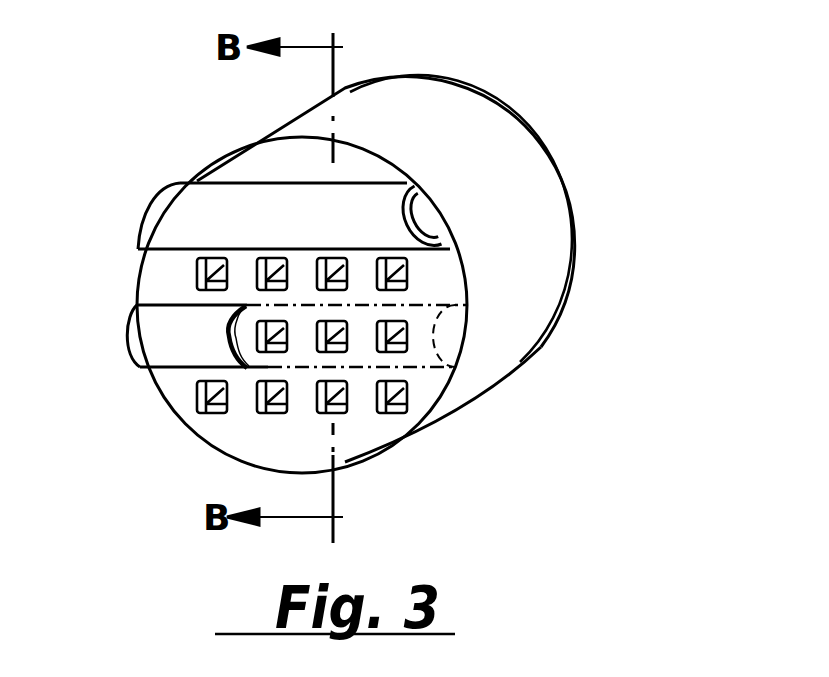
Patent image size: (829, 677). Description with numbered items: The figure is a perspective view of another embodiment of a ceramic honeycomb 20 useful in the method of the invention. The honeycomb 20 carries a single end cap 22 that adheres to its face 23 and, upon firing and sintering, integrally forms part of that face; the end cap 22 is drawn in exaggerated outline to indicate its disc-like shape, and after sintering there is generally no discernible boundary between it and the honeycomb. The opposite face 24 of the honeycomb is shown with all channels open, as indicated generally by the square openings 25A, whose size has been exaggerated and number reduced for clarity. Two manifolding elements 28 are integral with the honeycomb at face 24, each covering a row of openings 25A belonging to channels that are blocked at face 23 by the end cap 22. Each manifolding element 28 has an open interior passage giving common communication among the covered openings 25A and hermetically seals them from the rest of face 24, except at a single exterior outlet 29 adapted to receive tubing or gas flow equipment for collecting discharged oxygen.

The honeycomb 20 is at (483, 402).
The end cap 22 is at (528, 120).
The face 23 is at (578, 214).
The face 24 is at (290, 440).
The openings 25A is at (197, 280).
The manifolding elements 28 is at (198, 207).
The exterior outlet 29 is at (430, 222).